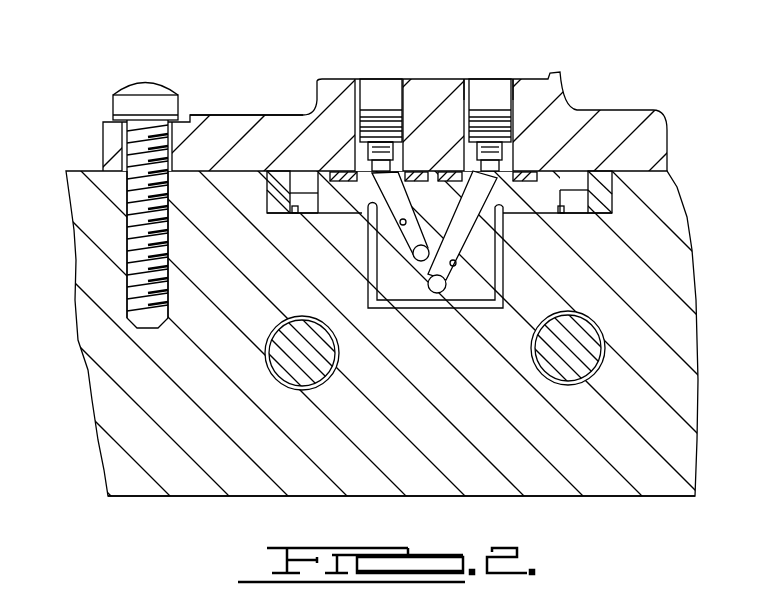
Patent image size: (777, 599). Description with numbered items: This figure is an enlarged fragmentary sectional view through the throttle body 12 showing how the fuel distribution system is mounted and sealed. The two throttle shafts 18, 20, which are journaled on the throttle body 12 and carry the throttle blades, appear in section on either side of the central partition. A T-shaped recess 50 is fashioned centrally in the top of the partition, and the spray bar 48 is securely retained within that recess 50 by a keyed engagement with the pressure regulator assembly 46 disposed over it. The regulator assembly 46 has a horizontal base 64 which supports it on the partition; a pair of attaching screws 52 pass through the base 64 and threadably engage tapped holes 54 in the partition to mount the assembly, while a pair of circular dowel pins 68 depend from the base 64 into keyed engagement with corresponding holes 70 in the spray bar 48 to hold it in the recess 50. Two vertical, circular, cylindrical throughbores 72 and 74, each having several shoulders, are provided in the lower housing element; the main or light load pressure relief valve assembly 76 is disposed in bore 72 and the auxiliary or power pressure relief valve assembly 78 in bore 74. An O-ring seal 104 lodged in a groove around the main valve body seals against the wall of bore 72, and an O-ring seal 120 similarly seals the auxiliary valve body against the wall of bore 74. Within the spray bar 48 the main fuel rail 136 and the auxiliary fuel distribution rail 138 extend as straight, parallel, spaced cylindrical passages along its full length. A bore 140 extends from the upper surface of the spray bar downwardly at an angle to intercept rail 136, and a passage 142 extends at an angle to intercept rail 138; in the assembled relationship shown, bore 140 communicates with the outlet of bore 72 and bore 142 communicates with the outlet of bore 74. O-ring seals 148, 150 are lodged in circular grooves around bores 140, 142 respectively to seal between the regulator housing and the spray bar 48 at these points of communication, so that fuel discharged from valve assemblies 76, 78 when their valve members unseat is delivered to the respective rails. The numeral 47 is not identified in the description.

The throttle body 12 is at (690, 221).
The base of block 47 is at (676, 415).
The horizontal base 64 is at (655, 137).
The pressure regulator assembly 46 is at (255, 113).
The T-shaped recess 50 is at (540, 210).
The circular dowel pins 68 is at (311, 192).
The holes 70 is at (297, 213).
The attaching screws 52 is at (147, 78).
The tapped holes 54 is at (130, 293).
The throughbore 74 is at (362, 82).
The main pressure relief valve assembly 76 is at (490, 78).
The auxiliary pressure relief valve assembly 78 is at (390, 117).
The O-ring seal 120 is at (398, 136).
The O-ring seal 104 is at (478, 118).
The throughbore 72 is at (503, 92).
The O-ring seal 150 is at (368, 100).
The O-ring seal 148 is at (523, 168).
The spray bar 48 is at (503, 285).
The auxiliary fuel distribution rail 138 is at (415, 262).
The main fuel rail 136 is at (435, 294).
The passage 142 is at (400, 228).
The bore 140 is at (457, 268).
The throttle shaft 18 is at (290, 363).
The throttle shaft 20 is at (600, 352).